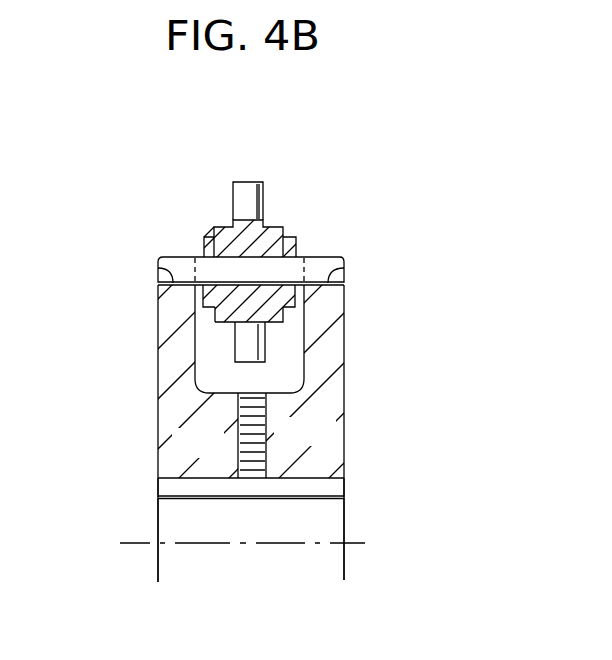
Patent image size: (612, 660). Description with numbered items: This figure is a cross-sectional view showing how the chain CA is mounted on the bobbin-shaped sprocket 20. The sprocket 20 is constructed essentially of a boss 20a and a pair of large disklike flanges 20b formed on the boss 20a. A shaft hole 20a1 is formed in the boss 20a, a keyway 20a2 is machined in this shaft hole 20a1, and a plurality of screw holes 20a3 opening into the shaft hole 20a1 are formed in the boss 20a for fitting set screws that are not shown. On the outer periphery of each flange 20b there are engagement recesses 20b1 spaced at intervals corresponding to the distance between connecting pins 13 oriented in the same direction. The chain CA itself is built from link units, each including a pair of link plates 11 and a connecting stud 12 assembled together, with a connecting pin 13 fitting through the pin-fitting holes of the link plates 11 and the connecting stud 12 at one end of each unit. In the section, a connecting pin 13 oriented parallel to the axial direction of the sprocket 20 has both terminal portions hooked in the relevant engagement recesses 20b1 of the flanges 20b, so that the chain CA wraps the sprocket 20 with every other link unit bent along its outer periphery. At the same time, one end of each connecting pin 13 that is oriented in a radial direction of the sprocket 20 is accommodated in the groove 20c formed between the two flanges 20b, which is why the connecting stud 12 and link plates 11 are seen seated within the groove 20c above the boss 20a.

The connecting pin 13 is at (245, 190).
The chain CA is at (229, 226).
The connecting stud 12 is at (268, 245).
The link plate 11 is at (203, 247).
The engagement recess 20b1 is at (158, 268).
The flange 20b is at (163, 344).
The sprocket 20 is at (158, 413).
The groove 20c is at (228, 386).
The screw hole 20a3 is at (266, 412).
The boss 20a is at (322, 457).
The keyway 20a2 is at (172, 478).
The shaft hole 20a1 is at (318, 499).